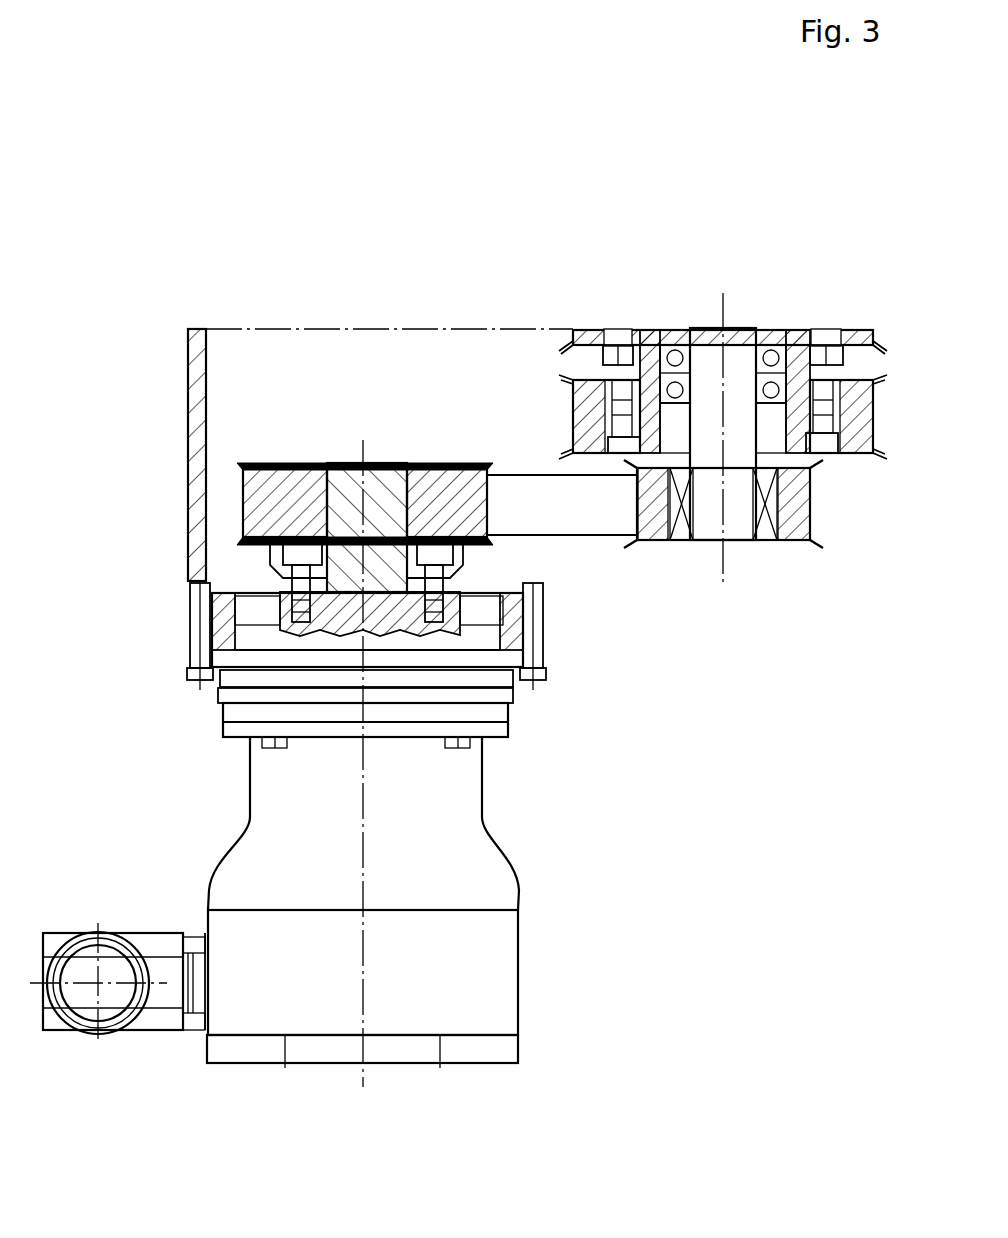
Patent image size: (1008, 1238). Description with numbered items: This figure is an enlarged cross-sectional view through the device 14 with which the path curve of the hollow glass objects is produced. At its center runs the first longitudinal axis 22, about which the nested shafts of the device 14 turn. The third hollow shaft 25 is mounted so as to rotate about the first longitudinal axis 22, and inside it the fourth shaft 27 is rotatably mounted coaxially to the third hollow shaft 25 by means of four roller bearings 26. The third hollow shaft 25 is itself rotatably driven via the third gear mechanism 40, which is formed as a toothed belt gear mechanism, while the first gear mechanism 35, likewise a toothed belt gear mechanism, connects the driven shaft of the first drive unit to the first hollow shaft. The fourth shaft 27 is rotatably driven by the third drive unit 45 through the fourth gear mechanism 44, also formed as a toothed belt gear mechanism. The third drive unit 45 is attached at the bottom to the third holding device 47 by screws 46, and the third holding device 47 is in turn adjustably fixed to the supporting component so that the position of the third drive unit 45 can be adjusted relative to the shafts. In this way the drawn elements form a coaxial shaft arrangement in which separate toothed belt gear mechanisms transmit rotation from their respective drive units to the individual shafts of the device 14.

The device 14 is at (692, 688).
The first longitudinal axis 22 is at (723, 562).
The third hollow shaft 25 is at (652, 327).
The roller bearings 26 is at (672, 327).
The fourth shaft 27 is at (710, 527).
The first gear mechanism 35 is at (560, 335).
The third gear mechanism 40 is at (560, 410).
The fourth gear mechanism 44 is at (232, 498).
The third drive unit 45 is at (436, 862).
The screws 46 is at (537, 687).
The third holding device 47 is at (197, 363).